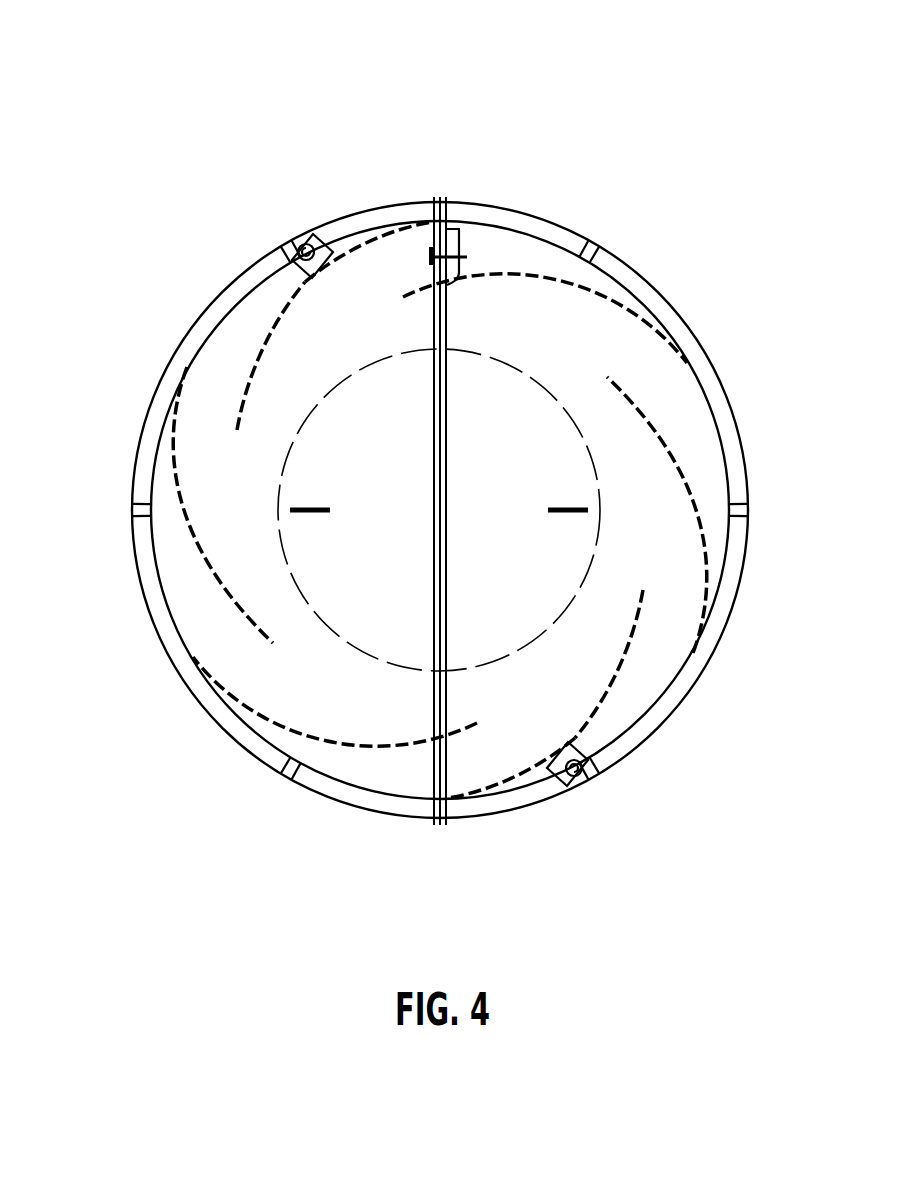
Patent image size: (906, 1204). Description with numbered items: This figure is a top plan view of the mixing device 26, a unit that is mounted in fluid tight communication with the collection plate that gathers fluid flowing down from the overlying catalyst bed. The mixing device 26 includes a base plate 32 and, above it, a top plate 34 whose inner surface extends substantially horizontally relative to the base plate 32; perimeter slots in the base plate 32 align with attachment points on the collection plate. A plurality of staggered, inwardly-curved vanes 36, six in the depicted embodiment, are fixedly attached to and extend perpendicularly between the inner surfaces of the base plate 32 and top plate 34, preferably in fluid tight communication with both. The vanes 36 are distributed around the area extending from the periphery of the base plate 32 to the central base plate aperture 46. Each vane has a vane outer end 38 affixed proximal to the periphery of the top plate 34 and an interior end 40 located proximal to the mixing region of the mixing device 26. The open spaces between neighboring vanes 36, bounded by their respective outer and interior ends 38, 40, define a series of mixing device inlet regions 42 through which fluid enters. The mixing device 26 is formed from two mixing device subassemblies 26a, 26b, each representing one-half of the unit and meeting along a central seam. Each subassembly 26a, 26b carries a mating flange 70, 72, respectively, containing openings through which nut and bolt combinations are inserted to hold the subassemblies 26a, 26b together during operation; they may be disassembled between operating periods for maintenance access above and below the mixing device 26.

The mixing device 26 is at (158, 76).
The mixing device subassembly 26a is at (358, 808).
The mixing device subassembly 26b is at (517, 808).
The base plate 32 is at (133, 476).
The top plate 34 is at (158, 437).
The inwardly-curved vanes 36 is at (271, 318).
The vane outer end 38 is at (372, 238).
The interior end 40 is at (237, 432).
The mixing device inlet region 42 is at (668, 390).
The base plate aperture 46 is at (603, 503).
The mating flange 70 is at (435, 196).
The mating flange 72 is at (444, 196).